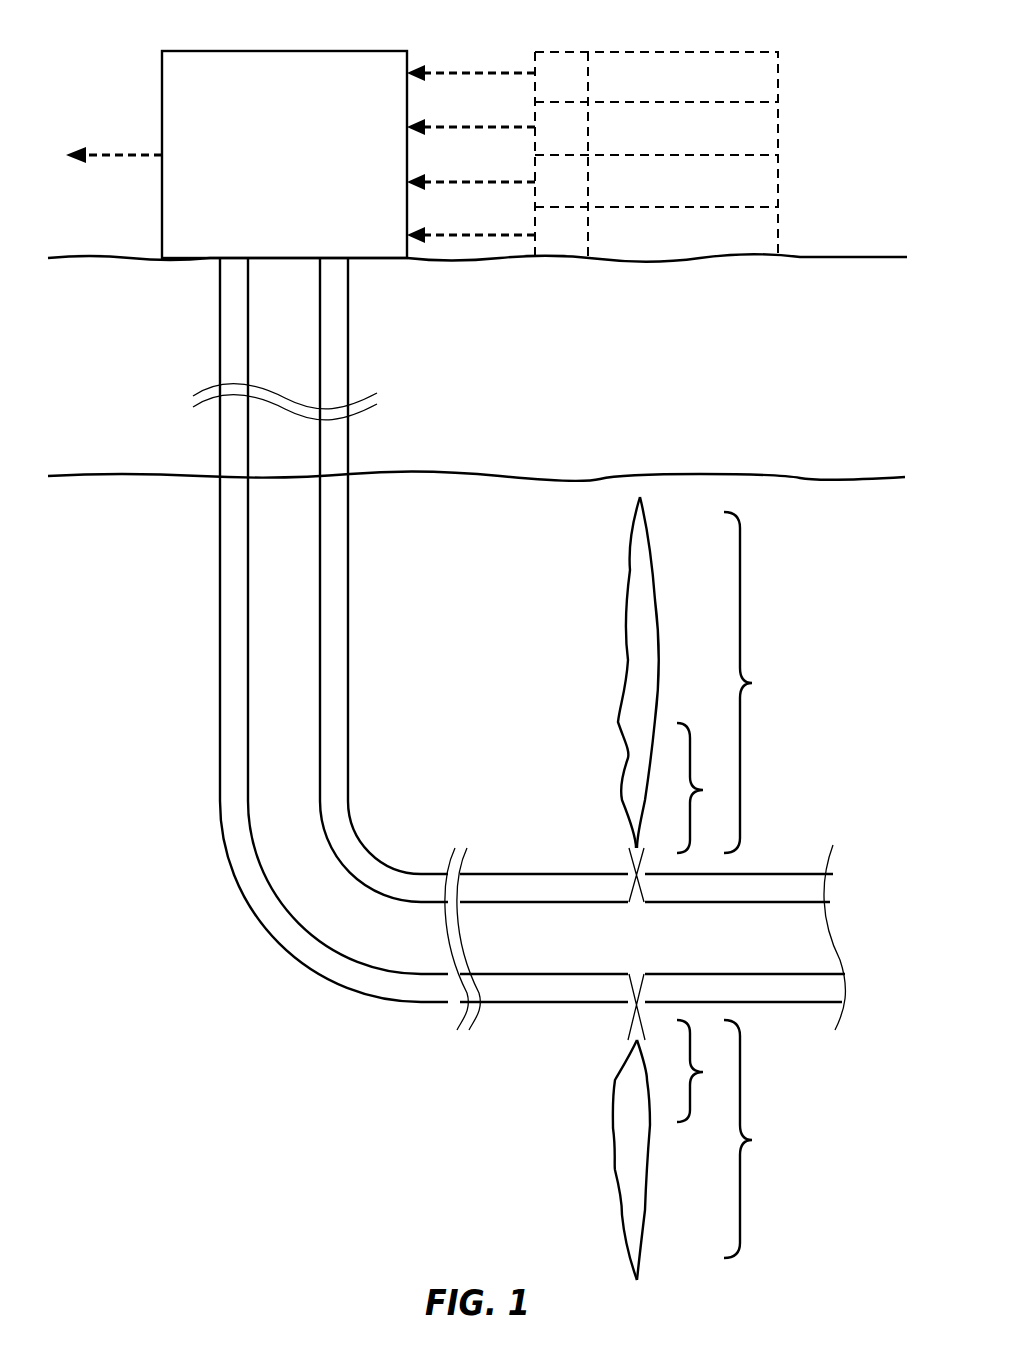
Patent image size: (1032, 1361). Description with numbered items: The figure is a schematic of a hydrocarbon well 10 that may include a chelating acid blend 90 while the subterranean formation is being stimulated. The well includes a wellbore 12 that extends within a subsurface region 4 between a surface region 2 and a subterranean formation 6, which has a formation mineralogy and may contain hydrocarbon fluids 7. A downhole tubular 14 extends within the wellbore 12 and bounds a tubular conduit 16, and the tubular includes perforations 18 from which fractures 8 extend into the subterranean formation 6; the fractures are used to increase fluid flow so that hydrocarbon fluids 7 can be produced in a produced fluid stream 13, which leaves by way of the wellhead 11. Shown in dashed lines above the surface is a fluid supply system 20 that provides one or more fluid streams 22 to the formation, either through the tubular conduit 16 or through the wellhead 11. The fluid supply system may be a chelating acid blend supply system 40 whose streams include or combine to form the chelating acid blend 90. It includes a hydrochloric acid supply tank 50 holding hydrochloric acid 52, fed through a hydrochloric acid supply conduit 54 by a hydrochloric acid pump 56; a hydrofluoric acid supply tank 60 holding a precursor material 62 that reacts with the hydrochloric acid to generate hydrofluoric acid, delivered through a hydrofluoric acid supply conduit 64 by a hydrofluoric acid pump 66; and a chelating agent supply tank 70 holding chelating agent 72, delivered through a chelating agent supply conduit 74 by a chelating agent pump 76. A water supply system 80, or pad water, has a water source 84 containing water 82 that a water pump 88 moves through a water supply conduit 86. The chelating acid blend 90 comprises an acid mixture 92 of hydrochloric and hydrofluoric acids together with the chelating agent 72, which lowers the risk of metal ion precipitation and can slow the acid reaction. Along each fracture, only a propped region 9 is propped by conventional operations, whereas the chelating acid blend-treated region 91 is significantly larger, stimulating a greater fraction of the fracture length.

The surface region 2 is at (839, 28).
The subsurface region 4 is at (840, 282).
The subterranean formation 6 is at (515, 490).
The hydrocarbon fluids 7 is at (458, 492).
The fracture 8 is at (614, 758).
The propped region 9 is at (701, 922).
The hydrocarbon well 10 is at (78, 55).
The wellhead 11 is at (162, 68).
The wellbore 12 is at (210, 338).
The produced fluid stream 13 is at (101, 160).
The downhole tubular 14 is at (248, 455).
The tubular conduit 16 is at (267, 500).
The perforation 18 is at (632, 866).
The fluid supply system 20 is at (848, 133).
The fluid stream 22 is at (455, 127).
The chelating acid blend supply system 40 is at (796, 178).
The hydrochloric acid supply tank 50 is at (608, 256).
The hydrochloric acid 52 is at (648, 247).
The hydrochloric acid supply conduit 54 is at (488, 256).
The hydrochloric acid pump 56 is at (548, 247).
The hydrofluoric acid supply tank 60 is at (698, 202).
The precursor material 62 is at (743, 187).
The hydrofluoric acid supply conduit 64 is at (485, 202).
The hydrofluoric acid pump 66 is at (568, 197).
The chelating agent supply tank 70 is at (610, 150).
The chelating agent 72 is at (655, 140).
The chelating agent supply conduit 74 is at (485, 145).
The chelating agent pump 76 is at (555, 137).
The water supply system 80 is at (796, 71).
The water 82 is at (628, 58).
The water source 84 is at (683, 62).
The water supply conduit 86 is at (488, 60).
The water pump 88 is at (557, 62).
The chelating acid blend 90 is at (610, 801).
The chelating acid blend-treated region 91 is at (755, 885).
The acid mixture 92 is at (630, 722).